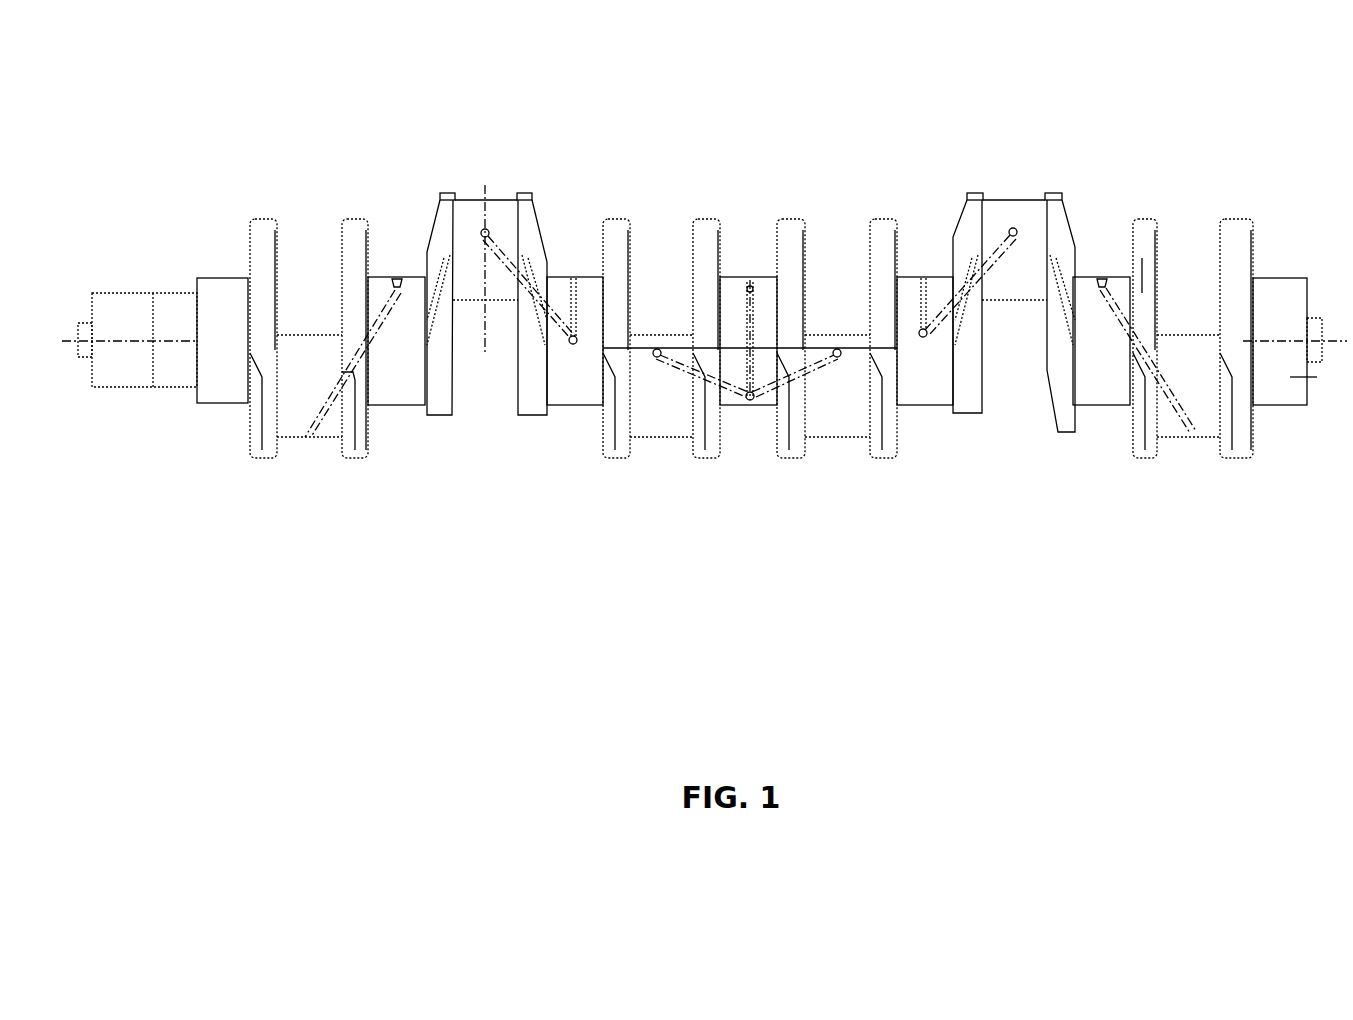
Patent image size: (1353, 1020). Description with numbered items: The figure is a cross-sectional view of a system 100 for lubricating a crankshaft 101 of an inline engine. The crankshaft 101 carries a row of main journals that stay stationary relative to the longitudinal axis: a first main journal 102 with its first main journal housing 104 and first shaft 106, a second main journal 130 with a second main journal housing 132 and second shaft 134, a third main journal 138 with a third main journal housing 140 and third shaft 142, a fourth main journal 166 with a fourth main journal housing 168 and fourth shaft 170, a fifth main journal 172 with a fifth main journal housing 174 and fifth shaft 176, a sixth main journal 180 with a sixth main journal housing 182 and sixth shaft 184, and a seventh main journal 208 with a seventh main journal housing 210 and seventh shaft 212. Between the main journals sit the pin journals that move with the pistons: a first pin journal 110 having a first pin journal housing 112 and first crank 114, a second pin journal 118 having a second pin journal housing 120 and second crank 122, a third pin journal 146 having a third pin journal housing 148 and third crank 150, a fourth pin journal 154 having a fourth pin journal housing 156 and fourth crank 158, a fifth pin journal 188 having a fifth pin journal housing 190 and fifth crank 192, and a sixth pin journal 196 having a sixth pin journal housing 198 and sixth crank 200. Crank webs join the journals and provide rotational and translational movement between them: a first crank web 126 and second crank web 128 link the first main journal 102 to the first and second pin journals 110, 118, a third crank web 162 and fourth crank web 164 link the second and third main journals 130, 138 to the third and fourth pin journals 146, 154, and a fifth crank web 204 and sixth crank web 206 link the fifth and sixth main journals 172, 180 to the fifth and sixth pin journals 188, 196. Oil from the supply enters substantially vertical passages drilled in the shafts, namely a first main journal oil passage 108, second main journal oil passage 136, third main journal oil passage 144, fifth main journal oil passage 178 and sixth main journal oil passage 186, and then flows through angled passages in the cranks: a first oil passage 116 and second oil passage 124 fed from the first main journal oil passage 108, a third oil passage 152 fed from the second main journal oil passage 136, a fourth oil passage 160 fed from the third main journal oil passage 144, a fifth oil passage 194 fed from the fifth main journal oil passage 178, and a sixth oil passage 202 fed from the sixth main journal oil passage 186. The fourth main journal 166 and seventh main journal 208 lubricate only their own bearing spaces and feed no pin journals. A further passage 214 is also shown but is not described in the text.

The system 100 is at (701, 299).
The crankshaft 101 is at (156, 235).
The first main journal 102 is at (711, 378).
The first main journal housing 104 is at (739, 323).
The first shaft 106 is at (739, 323).
The first main journal oil passage 108 is at (749, 358).
The first pin journal 110 is at (847, 452).
The first pin journal housing 112 is at (815, 375).
The first crank 114 is at (815, 375).
The first oil passage 116 is at (782, 376).
The second pin journal 118 is at (641, 372).
The second pin journal housing 120 is at (643, 338).
The second crank 122 is at (689, 386).
The second oil passage 124 is at (683, 363).
The first crank web 126 is at (790, 460).
The second crank web 128 is at (703, 468).
The second main journal 130 is at (563, 334).
The second main journal housing 132 is at (563, 311).
The second shaft 134 is at (568, 334).
The second main journal oil passage 136 is at (575, 281).
The third main journal 138 is at (409, 329).
The third main journal housing 140 is at (409, 311).
The third shaft 142 is at (418, 333).
The third main journal oil passage 144 is at (399, 283).
The third pin journal 146 is at (470, 327).
The third pin journal housing 148 is at (487, 197).
The third crank 150 is at (510, 221).
The third oil passage 152 is at (510, 237).
The fourth pin journal 154 is at (283, 372).
The fourth pin journal housing 156 is at (290, 330).
The fourth crank 158 is at (339, 398).
The fourth oil passage 160 is at (327, 418).
The third crank web 162 is at (532, 398).
The fourth crank web 164 is at (363, 453).
The fourth main journal 166 is at (221, 369).
The fourth main journal housing 168 is at (208, 275).
The fourth shaft 170 is at (222, 297).
The fifth main journal 172 is at (910, 424).
The fifth main journal housing 174 is at (918, 311).
The fifth shaft 176 is at (929, 343).
The fifth main journal oil passage 178 is at (927, 277).
The sixth main journal 180 is at (1127, 347).
The sixth main journal housing 182 is at (1130, 315).
The sixth shaft 184 is at (1103, 388).
The sixth main journal oil passage 186 is at (1107, 279).
The fifth pin journal 188 is at (982, 338).
The fifth pin journal housing 190 is at (986, 225).
The fifth crank 192 is at (986, 237).
The fifth oil passage 194 is at (992, 253).
The sixth pin journal 196 is at (1202, 448).
The sixth pin journal housing 198 is at (1188, 397).
The sixth crank 200 is at (1191, 397).
The sixth oil passage 202 is at (1141, 368).
The fifth crank web 204 is at (963, 413).
The sixth crank web 206 is at (1133, 452).
The seventh main journal 208 is at (1287, 373).
The seventh main journal housing 210 is at (1267, 277).
The seventh shaft 212 is at (1293, 293).
The oil passage 214 is at (750, 290).